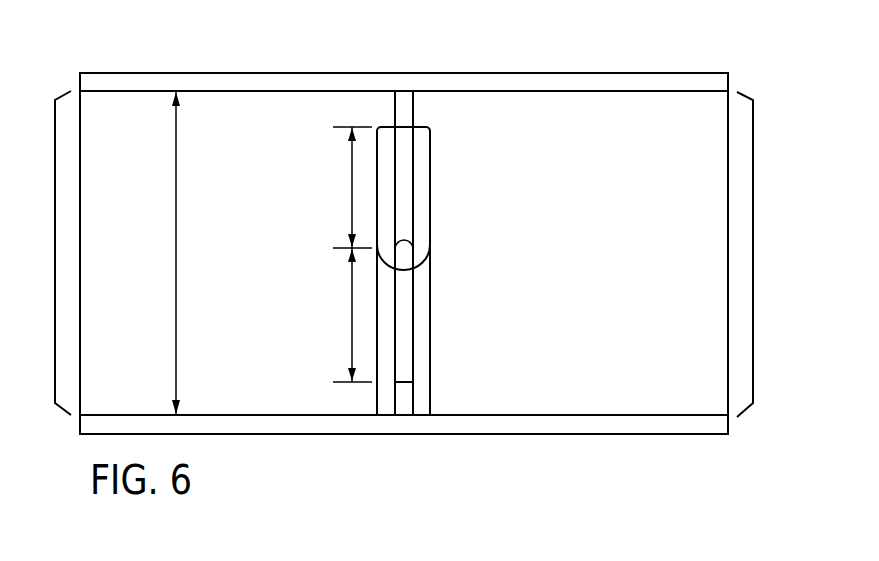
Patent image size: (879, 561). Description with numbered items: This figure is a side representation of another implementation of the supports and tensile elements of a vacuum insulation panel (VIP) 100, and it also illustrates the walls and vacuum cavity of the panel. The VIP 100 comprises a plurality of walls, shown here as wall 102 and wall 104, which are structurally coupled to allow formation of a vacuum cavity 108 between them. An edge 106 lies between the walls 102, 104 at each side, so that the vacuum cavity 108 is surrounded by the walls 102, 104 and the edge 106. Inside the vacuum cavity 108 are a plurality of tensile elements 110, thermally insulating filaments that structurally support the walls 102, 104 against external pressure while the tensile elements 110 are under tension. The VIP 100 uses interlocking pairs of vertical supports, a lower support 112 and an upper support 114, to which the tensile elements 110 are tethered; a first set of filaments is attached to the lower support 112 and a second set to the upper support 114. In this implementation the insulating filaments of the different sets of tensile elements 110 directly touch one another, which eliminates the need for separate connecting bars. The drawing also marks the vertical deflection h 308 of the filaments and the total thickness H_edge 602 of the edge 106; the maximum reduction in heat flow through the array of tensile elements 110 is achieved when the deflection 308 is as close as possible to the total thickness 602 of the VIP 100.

The vacuum insulation panel 100 is at (128, 53).
The wall 102 is at (503, 425).
The wall 104 is at (567, 82).
The edge 106 is at (54, 254).
The vacuum cavity 108 is at (608, 217).
The tensile elements 110 is at (418, 185).
The support 112 is at (422, 391).
The support 114 is at (408, 110).
The vertical deflection of the filaments 308 is at (348, 187).
The total thickness of the edge 602 is at (172, 303).